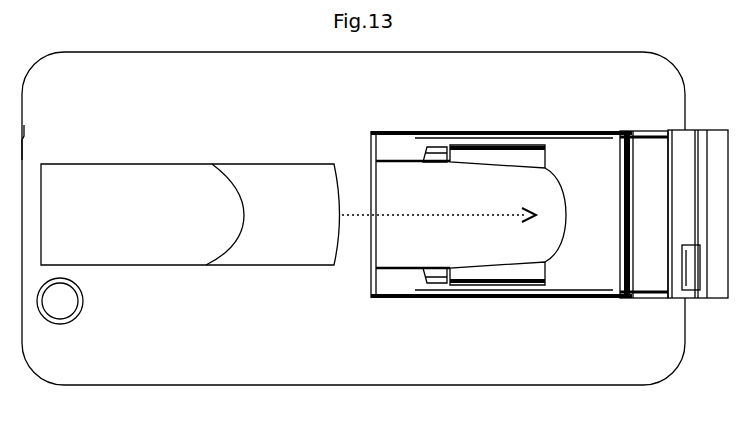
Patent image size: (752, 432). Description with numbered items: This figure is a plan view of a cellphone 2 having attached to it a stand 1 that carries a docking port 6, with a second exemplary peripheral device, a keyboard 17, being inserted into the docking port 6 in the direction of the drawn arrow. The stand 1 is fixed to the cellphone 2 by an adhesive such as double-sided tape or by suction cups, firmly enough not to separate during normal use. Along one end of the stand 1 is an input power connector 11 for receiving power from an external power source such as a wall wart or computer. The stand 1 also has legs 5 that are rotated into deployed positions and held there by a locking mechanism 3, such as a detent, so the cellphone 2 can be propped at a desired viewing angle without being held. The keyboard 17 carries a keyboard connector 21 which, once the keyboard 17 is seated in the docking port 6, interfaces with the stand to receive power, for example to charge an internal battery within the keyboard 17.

The stand 1 is at (704, 122).
The cellphone 2 is at (577, 350).
The locking mechanism 3 is at (650, 165).
The legs 5 is at (500, 138).
The docking port 6 is at (358, 203).
The input power connector 11 is at (692, 272).
The keyboard 17 is at (204, 160).
The keyboard connector 21 is at (340, 217).